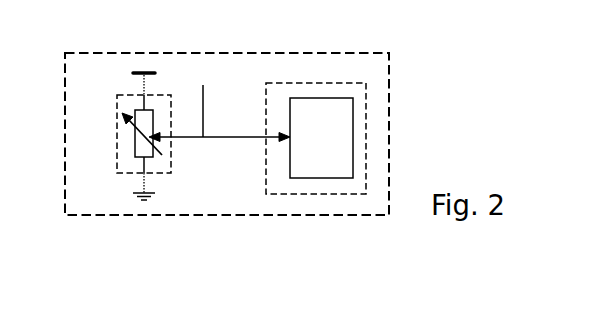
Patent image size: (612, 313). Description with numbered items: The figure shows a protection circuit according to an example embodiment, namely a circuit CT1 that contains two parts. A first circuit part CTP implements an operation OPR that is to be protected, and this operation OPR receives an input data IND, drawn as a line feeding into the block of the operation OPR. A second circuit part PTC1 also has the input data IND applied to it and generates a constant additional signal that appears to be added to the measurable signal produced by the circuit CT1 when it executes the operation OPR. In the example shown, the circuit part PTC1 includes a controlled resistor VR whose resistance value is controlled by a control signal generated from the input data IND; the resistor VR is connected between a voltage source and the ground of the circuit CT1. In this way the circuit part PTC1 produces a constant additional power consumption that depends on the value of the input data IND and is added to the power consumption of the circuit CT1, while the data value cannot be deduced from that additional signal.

The circuit CT1 is at (389, 53).
The circuit part PTC1 is at (171, 173).
The controlled resistor VR is at (135, 151).
The input data IND is at (203, 100).
The circuit part CTP is at (366, 194).
The operation OPR is at (342, 148).